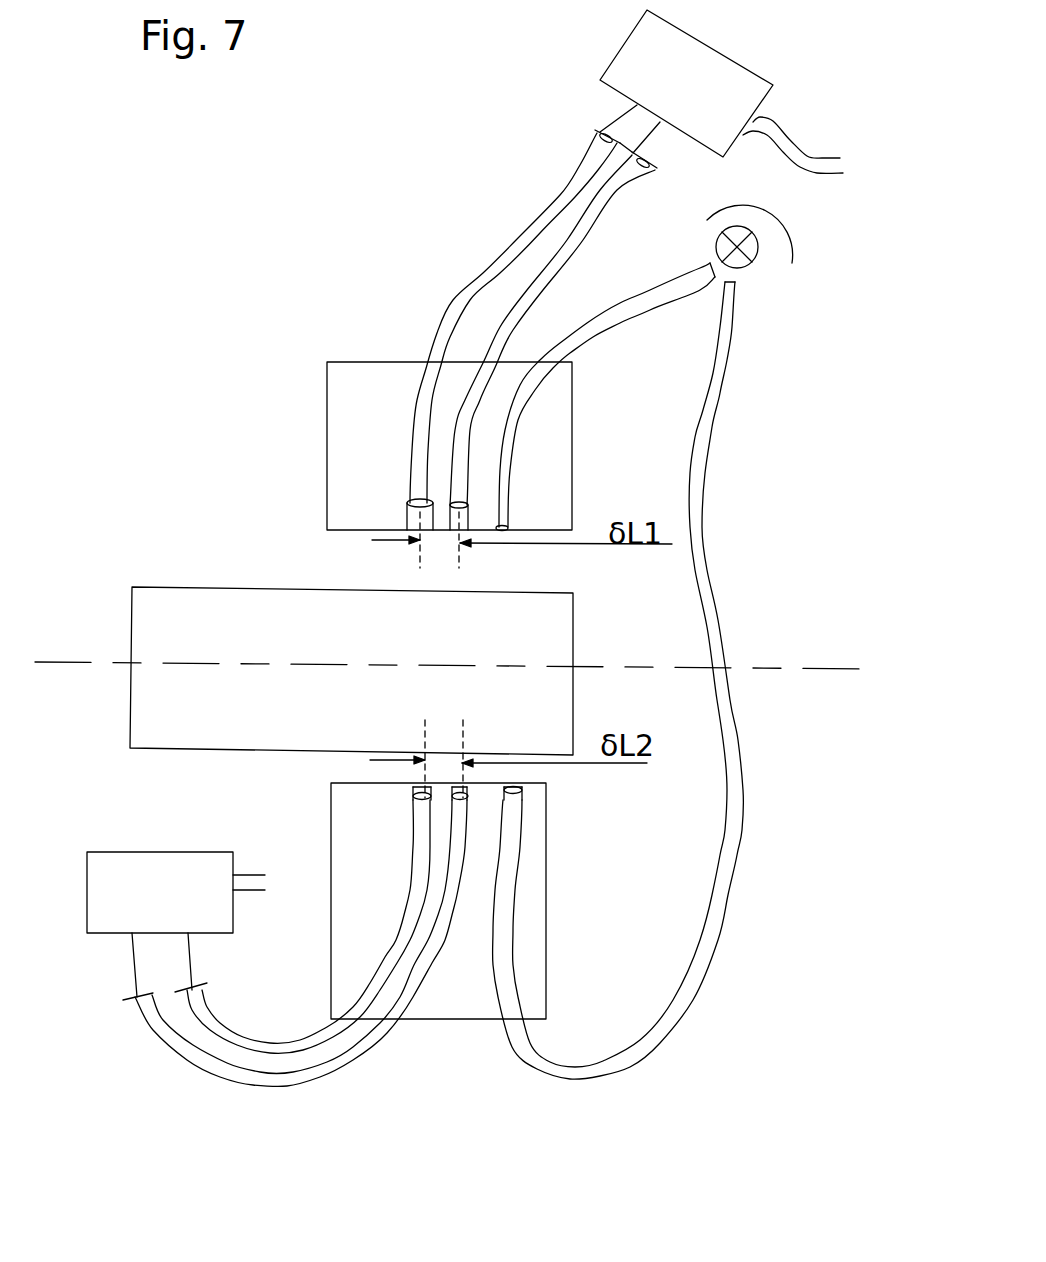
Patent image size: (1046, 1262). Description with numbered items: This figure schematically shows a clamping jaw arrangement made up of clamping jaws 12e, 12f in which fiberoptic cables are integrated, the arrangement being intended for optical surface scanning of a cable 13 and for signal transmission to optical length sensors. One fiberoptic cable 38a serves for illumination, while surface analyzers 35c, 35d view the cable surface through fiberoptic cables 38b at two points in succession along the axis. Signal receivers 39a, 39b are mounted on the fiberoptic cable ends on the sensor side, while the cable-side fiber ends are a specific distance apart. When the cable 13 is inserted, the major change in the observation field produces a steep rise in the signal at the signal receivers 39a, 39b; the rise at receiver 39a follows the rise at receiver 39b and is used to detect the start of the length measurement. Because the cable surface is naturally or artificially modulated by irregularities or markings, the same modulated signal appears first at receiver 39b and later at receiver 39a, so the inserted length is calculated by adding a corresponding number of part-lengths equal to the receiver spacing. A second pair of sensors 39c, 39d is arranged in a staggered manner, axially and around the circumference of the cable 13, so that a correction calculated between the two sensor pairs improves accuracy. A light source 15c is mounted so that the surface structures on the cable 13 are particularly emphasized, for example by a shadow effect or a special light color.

The surface analyzer 35c is at (645, 75).
The signal receiver 39a is at (657, 137).
The signal receiver 39b is at (617, 120).
The fiberoptic cable 38b is at (510, 233).
The light source 15c is at (790, 243).
The fiberoptic cable 38a is at (743, 375).
The clamping jaw 12f is at (347, 450).
The cable 13 is at (502, 700).
The clamping jaw 12e is at (530, 917).
The surface analyzer 35d is at (115, 868).
The sensor 39c is at (140, 997).
The sensor 39d is at (203, 987).